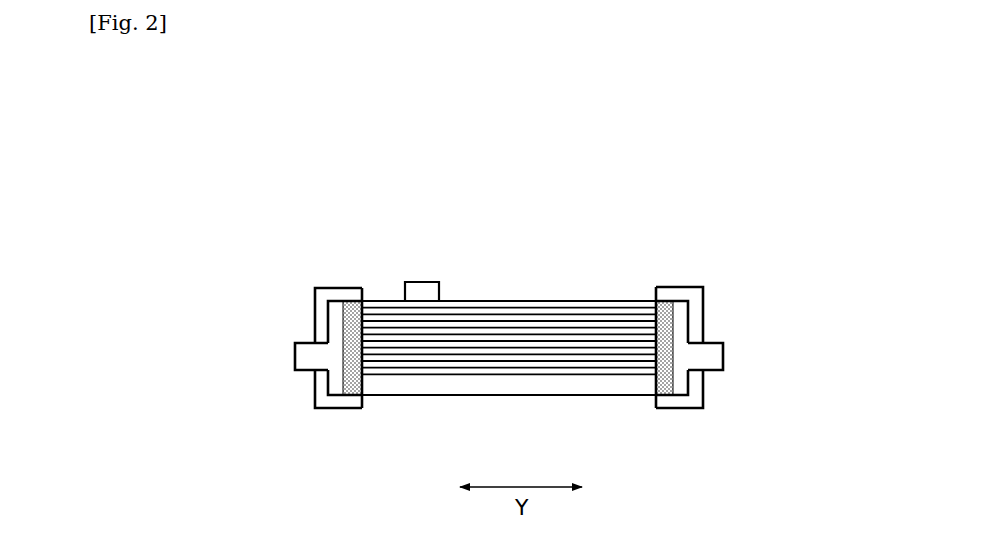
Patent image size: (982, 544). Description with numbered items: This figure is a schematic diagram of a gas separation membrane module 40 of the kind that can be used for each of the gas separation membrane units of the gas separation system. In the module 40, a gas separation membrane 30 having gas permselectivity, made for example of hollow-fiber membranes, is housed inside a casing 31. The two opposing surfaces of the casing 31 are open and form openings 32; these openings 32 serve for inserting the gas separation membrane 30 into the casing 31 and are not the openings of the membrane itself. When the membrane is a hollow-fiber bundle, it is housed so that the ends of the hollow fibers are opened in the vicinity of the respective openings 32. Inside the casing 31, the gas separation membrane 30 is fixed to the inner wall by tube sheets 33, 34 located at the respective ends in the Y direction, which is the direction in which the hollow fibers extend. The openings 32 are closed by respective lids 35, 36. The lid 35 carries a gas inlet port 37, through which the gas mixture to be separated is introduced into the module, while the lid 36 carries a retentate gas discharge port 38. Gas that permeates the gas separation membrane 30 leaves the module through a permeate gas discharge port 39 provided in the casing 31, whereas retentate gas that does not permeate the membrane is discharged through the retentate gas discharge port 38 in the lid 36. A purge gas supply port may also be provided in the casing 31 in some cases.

The gas separation membrane module 40 is at (573, 208).
The gas separation membrane 30 is at (562, 380).
The casing 31 is at (493, 397).
The openings 32 is at (337, 363).
The tube sheet 33 is at (372, 390).
The tube sheet 34 is at (648, 390).
The lid 35 is at (327, 288).
The lid 36 is at (680, 287).
The gas inlet port 37 is at (288, 373).
The retentate gas discharge port 38 is at (730, 335).
The permeate gas discharge port 39 is at (445, 275).